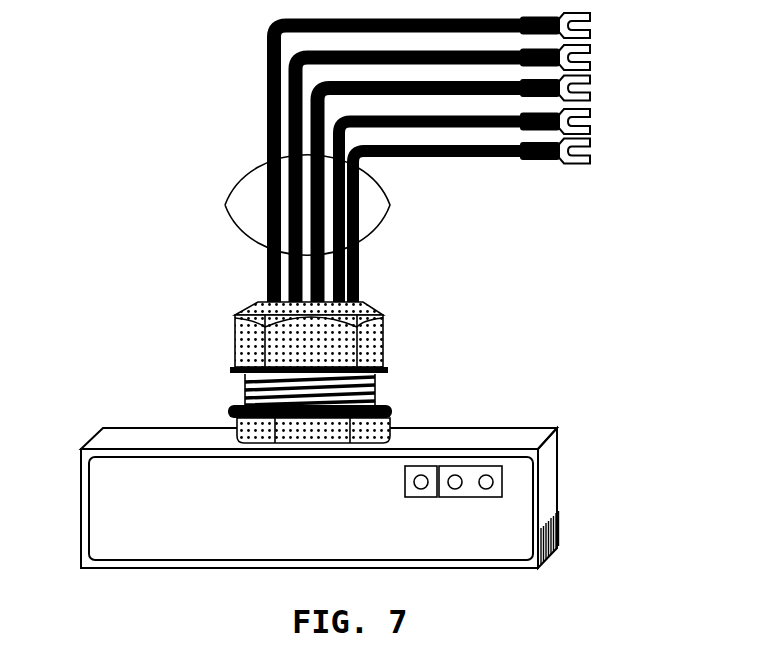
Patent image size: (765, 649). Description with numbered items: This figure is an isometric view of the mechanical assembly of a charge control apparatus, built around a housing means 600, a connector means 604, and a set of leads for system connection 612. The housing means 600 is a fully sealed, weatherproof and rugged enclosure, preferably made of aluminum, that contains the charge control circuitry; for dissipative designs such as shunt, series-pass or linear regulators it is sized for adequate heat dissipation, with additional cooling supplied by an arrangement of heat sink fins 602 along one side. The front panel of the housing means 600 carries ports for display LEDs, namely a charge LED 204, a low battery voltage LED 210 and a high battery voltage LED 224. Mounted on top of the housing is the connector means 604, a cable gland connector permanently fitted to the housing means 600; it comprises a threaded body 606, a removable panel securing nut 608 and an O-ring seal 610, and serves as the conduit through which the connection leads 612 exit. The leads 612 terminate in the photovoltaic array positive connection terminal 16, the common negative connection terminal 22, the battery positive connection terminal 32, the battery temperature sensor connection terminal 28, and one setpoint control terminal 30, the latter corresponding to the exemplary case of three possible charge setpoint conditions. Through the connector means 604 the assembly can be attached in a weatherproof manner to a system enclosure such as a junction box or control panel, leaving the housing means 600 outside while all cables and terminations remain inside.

The photovoltaic array "+" connection terminal 16 is at (593, 23).
The common "−" connection terminal 22 is at (593, 55).
The battery "+" connection terminal 32 is at (593, 86).
The battery temperature sensor connection terminal 28 is at (593, 117).
The setpoint control terminal 30 is at (593, 147).
The leads for system connection 612 is at (229, 176).
The connector means 604 is at (222, 330).
The threaded body 606 is at (240, 393).
The removable panel securing nut 608 is at (393, 352).
The O-ring seal 610 is at (393, 408).
The housing means 600 is at (103, 421).
The heat sink fins 602 is at (563, 539).
The charge LED 204 is at (421, 494).
The low battery voltage LED 210 is at (456, 470).
The high battery voltage LED 224 is at (488, 470).